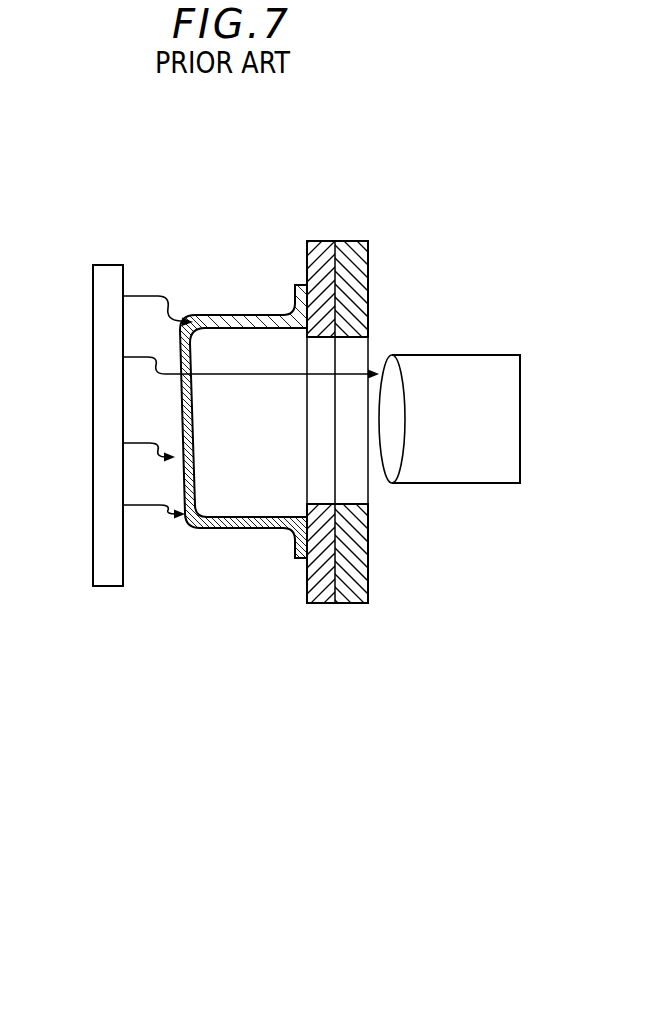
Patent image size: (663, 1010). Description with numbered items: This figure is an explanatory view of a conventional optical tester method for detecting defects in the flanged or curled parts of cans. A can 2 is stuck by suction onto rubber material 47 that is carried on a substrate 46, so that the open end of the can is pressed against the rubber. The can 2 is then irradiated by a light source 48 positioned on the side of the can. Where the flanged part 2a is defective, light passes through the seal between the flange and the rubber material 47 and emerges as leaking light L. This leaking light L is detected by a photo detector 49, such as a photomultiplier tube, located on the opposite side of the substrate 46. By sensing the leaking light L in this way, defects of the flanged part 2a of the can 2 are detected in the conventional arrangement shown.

The can 2 is at (230, 529).
The flanged part 2a is at (296, 540).
The substrate 46 is at (368, 281).
The rubber material 47 is at (309, 588).
The light source 48 is at (102, 462).
The photo detector 49 is at (470, 355).
The leaking light L is at (258, 376).